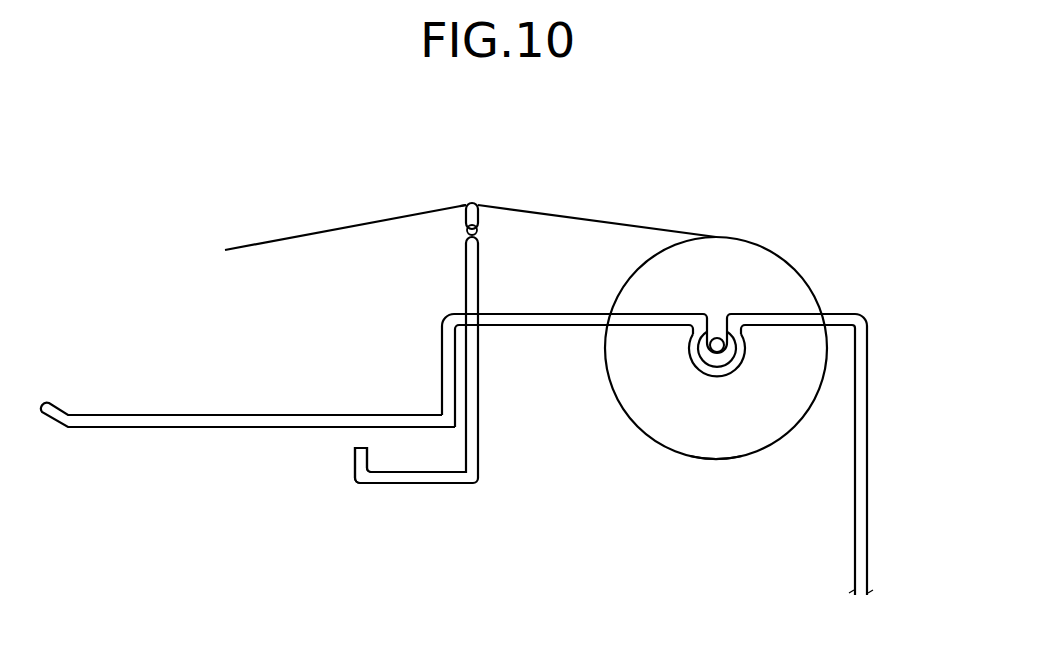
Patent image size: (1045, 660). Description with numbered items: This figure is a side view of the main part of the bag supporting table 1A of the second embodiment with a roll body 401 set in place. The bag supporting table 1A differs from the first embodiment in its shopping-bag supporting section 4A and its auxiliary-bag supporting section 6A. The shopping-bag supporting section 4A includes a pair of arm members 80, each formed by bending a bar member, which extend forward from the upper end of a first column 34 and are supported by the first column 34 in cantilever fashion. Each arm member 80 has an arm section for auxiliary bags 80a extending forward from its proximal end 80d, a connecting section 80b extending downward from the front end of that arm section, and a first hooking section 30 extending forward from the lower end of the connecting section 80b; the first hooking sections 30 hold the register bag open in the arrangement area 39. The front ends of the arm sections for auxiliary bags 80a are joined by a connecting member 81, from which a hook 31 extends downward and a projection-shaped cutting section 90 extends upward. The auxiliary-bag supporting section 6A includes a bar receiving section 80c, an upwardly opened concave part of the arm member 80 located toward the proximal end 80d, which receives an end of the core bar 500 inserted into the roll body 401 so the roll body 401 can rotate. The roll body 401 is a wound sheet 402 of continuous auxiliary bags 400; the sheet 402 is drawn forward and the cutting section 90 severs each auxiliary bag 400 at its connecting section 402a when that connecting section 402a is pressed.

The bag supporting table 1A is at (130, 530).
The shopping-bag supporting section 4A is at (108, 397).
The auxiliary-bag supporting section 6A is at (672, 385).
The first hooking section 30 is at (230, 430).
The hook 31 is at (433, 484).
The first column 34 is at (868, 459).
The arrangement area 39 is at (459, 514).
The arm member 80 is at (652, 370).
The arm section for auxiliary bags 80a is at (548, 327).
The connecting section 80b is at (442, 358).
The bar receiving section 80c is at (726, 362).
The proximal end 80d is at (838, 331).
The connecting member 81 is at (481, 273).
The cutting section 90 is at (481, 216).
The auxiliary bag 400 is at (470, 178).
The roll body 401 is at (746, 464).
The sheet 402 is at (362, 178).
The connecting section 402a is at (474, 203).
The core bar 500 is at (716, 328).